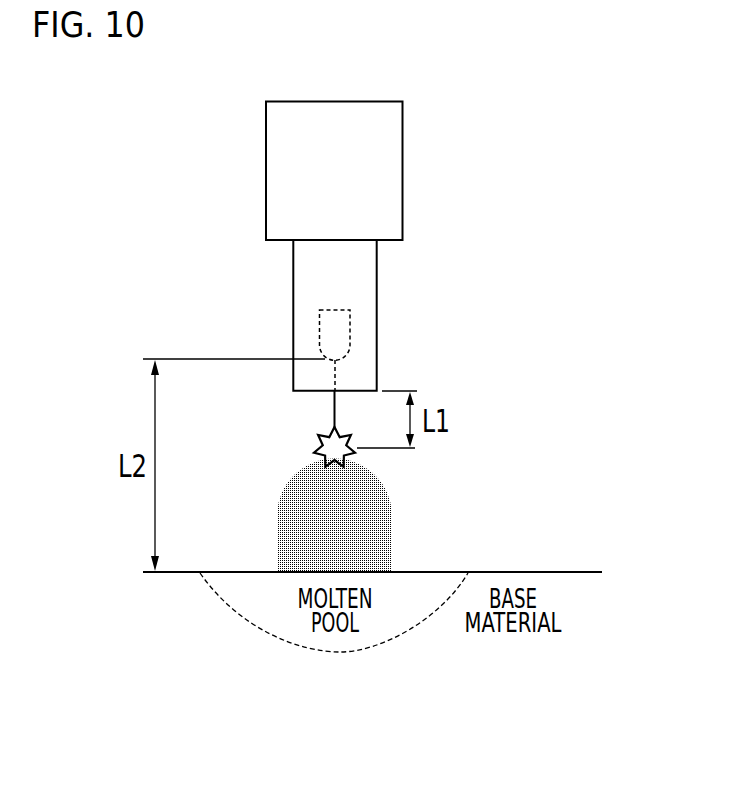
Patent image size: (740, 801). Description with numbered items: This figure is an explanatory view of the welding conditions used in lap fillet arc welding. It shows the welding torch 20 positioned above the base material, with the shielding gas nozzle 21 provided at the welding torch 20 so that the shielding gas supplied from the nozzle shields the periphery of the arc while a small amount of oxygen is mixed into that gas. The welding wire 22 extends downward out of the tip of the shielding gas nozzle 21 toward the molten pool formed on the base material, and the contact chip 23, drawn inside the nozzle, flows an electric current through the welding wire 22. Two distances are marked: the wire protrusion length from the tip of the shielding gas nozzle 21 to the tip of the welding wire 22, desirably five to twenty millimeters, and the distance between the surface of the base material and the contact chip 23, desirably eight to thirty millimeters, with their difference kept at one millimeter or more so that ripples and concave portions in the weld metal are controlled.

The welding torch 20 is at (377, 101).
The shielding gas nozzle 21 is at (293, 282).
The welding wire 22 is at (335, 409).
The contact chip 23 is at (350, 337).